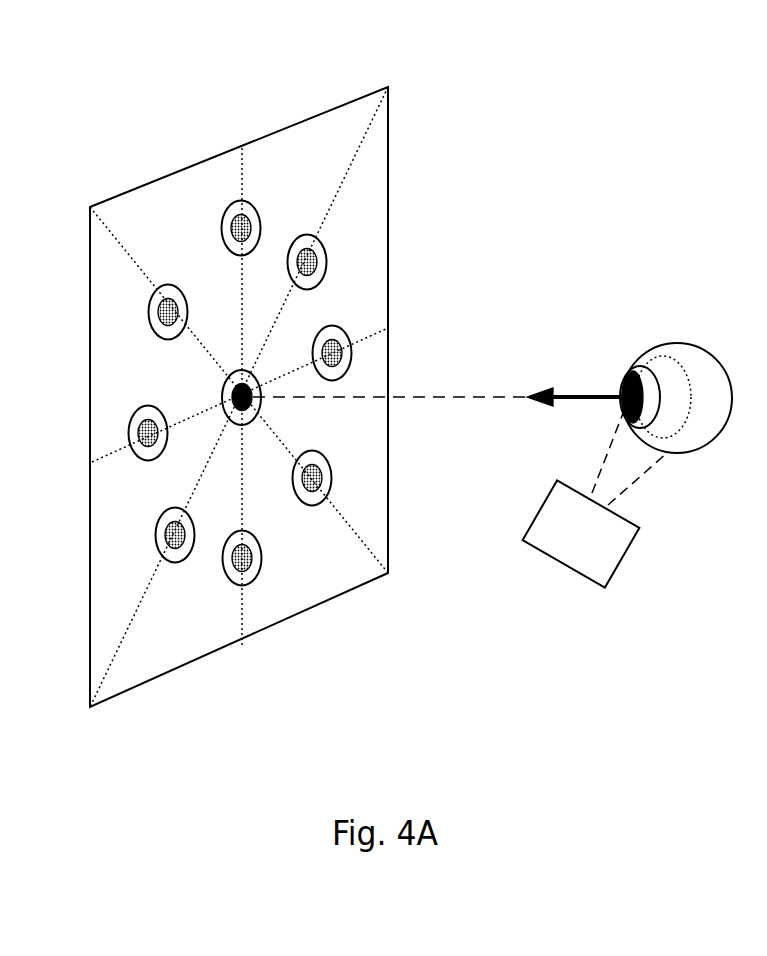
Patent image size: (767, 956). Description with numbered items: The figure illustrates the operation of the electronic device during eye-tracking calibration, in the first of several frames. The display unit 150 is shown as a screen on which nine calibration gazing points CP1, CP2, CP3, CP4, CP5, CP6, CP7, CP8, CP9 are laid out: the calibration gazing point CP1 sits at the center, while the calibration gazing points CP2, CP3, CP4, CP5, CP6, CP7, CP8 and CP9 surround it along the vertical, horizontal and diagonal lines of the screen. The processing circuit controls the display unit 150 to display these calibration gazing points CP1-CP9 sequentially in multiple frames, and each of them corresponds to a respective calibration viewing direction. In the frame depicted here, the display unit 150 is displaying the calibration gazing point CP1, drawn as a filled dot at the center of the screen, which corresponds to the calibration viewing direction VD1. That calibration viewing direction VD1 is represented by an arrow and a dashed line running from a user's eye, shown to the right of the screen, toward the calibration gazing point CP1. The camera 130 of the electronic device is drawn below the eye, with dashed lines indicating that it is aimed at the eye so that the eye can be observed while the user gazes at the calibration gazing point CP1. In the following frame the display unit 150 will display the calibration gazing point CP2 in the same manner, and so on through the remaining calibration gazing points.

The display unit 150 is at (277, 132).
The calibration gazing point CP1 is at (250, 390).
The calibration gazing point CP2 is at (240, 225).
The calibration gazing point CP3 is at (310, 263).
The calibration gazing point CP4 is at (333, 353).
The calibration gazing point CP5 is at (313, 478).
The calibration gazing point CP6 is at (244, 558).
The calibration gazing point CP7 is at (175, 535).
The calibration gazing point CP8 is at (148, 433).
The calibration gazing point CP9 is at (168, 310).
The calibration viewing direction VD1 is at (582, 397).
The camera 130 is at (595, 495).